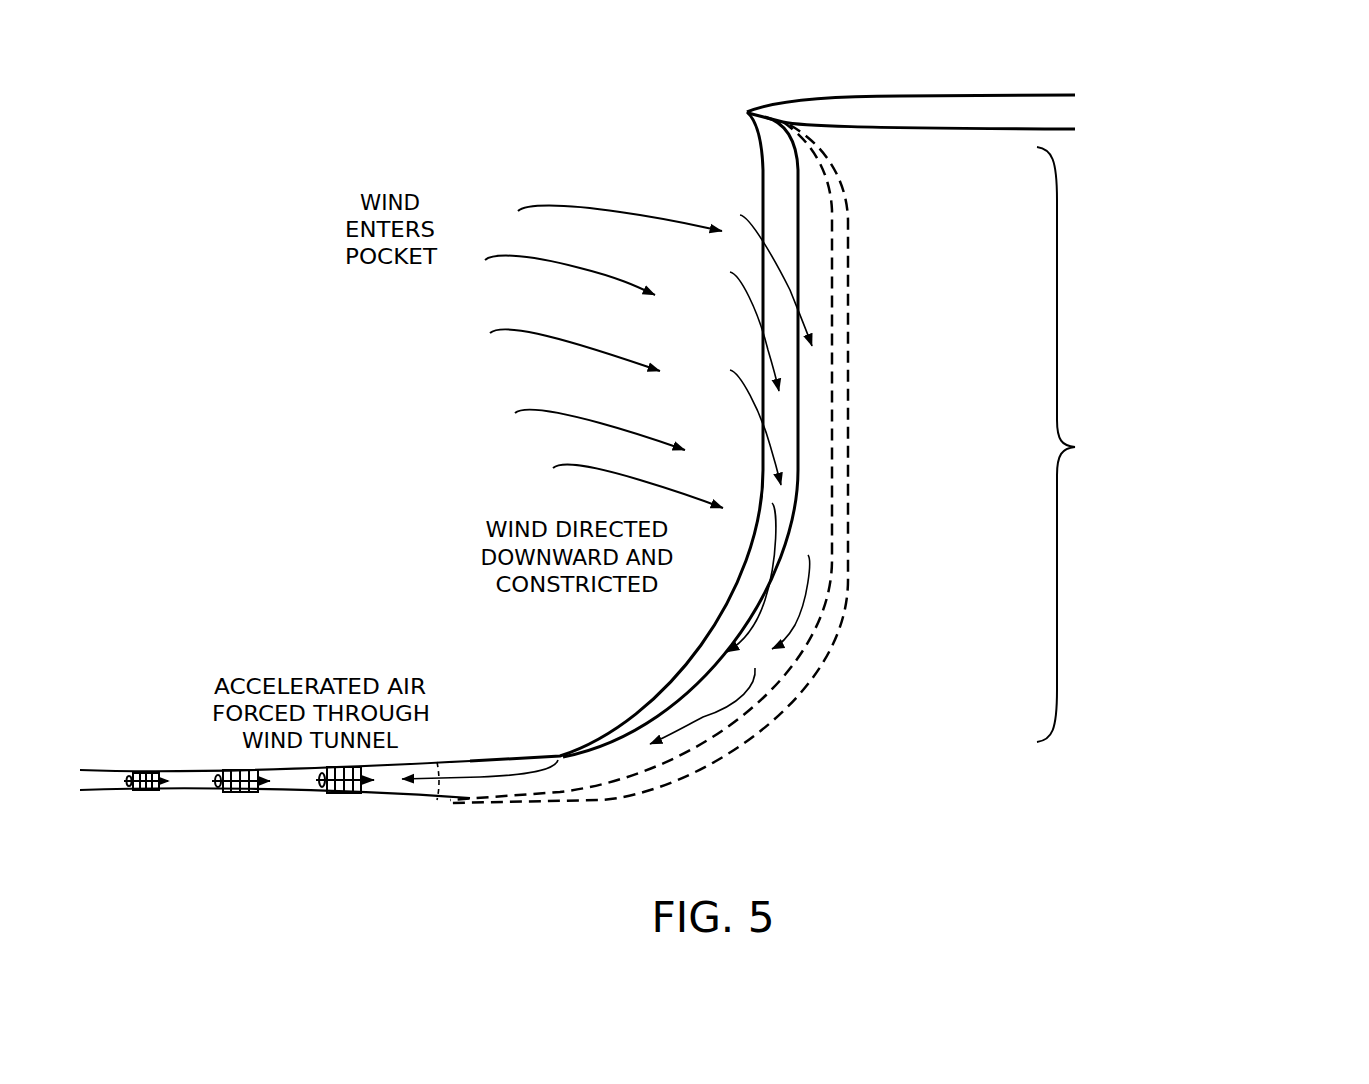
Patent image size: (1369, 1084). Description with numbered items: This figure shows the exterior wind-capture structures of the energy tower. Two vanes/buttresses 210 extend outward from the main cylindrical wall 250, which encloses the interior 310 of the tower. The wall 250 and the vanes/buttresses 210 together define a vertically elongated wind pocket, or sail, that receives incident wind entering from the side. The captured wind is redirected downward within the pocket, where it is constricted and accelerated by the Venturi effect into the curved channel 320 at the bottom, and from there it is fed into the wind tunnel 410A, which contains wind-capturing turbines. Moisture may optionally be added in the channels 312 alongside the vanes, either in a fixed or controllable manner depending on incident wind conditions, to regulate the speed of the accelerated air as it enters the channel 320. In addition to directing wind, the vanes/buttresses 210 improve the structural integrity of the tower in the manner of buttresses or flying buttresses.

The vanes/buttresses 210 is at (762, 136).
The channels 312 is at (804, 272).
The cylindrical wall 250 is at (836, 430).
The interior 310 is at (970, 518).
The wind-directing channel 320 is at (620, 767).
The wind tunnel 410A is at (190, 770).